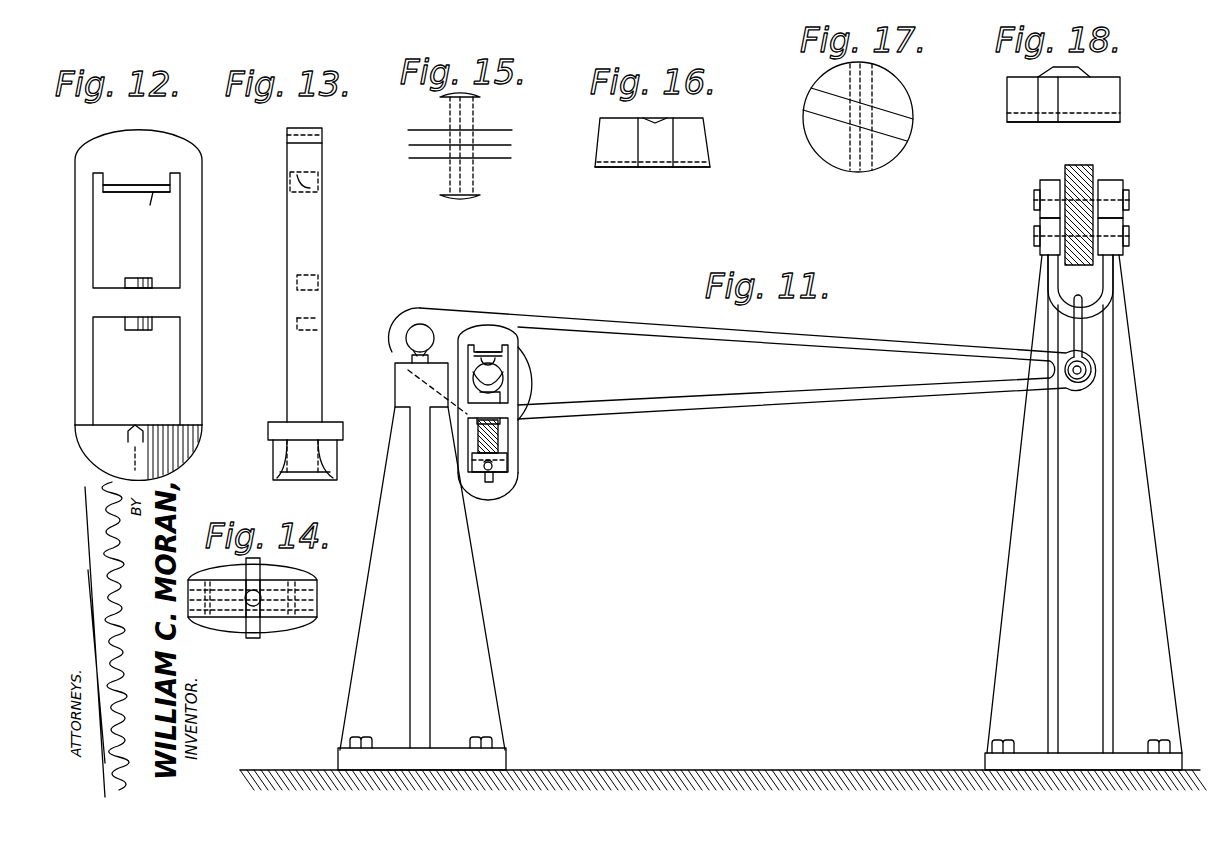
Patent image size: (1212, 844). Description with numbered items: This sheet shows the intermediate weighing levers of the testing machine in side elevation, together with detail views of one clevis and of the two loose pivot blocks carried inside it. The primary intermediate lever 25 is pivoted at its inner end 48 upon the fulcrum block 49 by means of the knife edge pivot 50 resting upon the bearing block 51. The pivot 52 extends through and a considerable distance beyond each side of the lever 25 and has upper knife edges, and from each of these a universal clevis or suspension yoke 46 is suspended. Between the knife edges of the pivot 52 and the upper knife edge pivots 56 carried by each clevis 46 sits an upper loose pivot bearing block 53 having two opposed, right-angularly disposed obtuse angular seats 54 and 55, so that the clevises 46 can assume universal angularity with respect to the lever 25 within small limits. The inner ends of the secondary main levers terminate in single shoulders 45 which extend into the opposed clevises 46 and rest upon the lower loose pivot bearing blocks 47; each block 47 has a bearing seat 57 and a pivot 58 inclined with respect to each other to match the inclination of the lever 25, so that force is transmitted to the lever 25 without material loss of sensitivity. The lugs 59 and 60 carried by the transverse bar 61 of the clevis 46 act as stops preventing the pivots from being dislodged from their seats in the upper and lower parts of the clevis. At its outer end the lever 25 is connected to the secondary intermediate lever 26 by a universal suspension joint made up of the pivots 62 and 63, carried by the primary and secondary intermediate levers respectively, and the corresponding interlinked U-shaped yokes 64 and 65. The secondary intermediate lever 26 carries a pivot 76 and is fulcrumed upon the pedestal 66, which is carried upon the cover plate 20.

In FIG. 11, the cover plate 20 is at (723, 764).
In FIG. 11, the primary intermediate lever 25 is at (758, 363).
In FIG. 11, the secondary intermediate lever 26 is at (1080, 168).
In FIG. 11, the shoulder 45 is at (504, 440).
In FIG. 11, the clevis 46 is at (482, 325).
In FIG. 12, the clevis 46 is at (190, 246).
In FIG. 13, the clevis 46 is at (322, 240).
In FIG. 14, the clevis 46 is at (318, 568).
In FIG. 11, the lower loose pivot bearing block 47 is at (500, 470).
In FIG. 17, the lower loose pivot bearing block 47 is at (895, 95).
In FIG. 18, the lower loose pivot bearing block 47 is at (1100, 95).
In FIG. 11, the inner end 48 is at (424, 296).
In FIG. 11, the fulcrum block 49 is at (468, 607).
In FIG. 11, the knife edge pivot 50 is at (410, 328).
In FIG. 14, the knife edge pivot 50 is at (240, 636).
In FIG. 11, the bearing block 51 is at (410, 365).
In FIG. 11, the pivot 52 is at (530, 383).
In FIG. 11, the upper loose pivot bearing block 53 is at (505, 368).
In FIG. 15, the upper loose pivot bearing block 53 is at (510, 170).
In FIG. 16, the upper loose pivot bearing block 53 is at (698, 140).
In FIG. 11, the obtuse angular seat 54 is at (492, 357).
In FIG. 15, the obtuse angular seat 54 is at (500, 138).
In FIG. 16, the obtuse angular seat 54 is at (657, 121).
In FIG. 11, the obtuse angular seat 55 is at (500, 380).
In FIG. 15, the obtuse angular seat 55 is at (450, 197).
In FIG. 16, the obtuse angular seat 55 is at (672, 168).
In FIG. 11, the upper knife edge pivot 56 is at (488, 343).
In FIG. 12, the upper knife edge pivot 56 is at (136, 206).
In FIG. 13, the upper knife edge pivot 56 is at (318, 190).
In FIG. 11, the bearing seat 57 is at (489, 482).
In FIG. 12, the bearing seat 57 is at (135, 433).
In FIG. 17, the bearing seat 57 is at (875, 148).
In FIG. 18, the bearing seat 57 is at (1015, 122).
In FIG. 11, the pivot 58 is at (497, 462).
In FIG. 17, the pivot 58 is at (890, 115).
In FIG. 18, the pivot 58 is at (1068, 70).
In FIG. 11, the lug 59 is at (500, 398).
In FIG. 12, the lug 59 is at (142, 268).
In FIG. 13, the lug 59 is at (297, 282).
In FIG. 14, the lug 59 is at (265, 606).
In FIG. 11, the lug 60 is at (500, 432).
In FIG. 12, the lug 60 is at (130, 328).
In FIG. 13, the lug 60 is at (297, 326).
In FIG. 11, the transverse bar 61 is at (500, 424).
In FIG. 12, the transverse bar 61 is at (130, 291).
In FIG. 13, the transverse bar 61 is at (297, 308).
In FIG. 11, the pivot 62 is at (1090, 368).
In FIG. 11, the pivot 63 is at (1130, 234).
In FIG. 11, the U-shaped yoke 64 is at (1085, 336).
In FIG. 11, the U-shaped yoke 65 is at (1108, 300).
In FIG. 11, the pedestal 66 is at (1137, 575).
In FIG. 11, the pivot 76 is at (1130, 198).